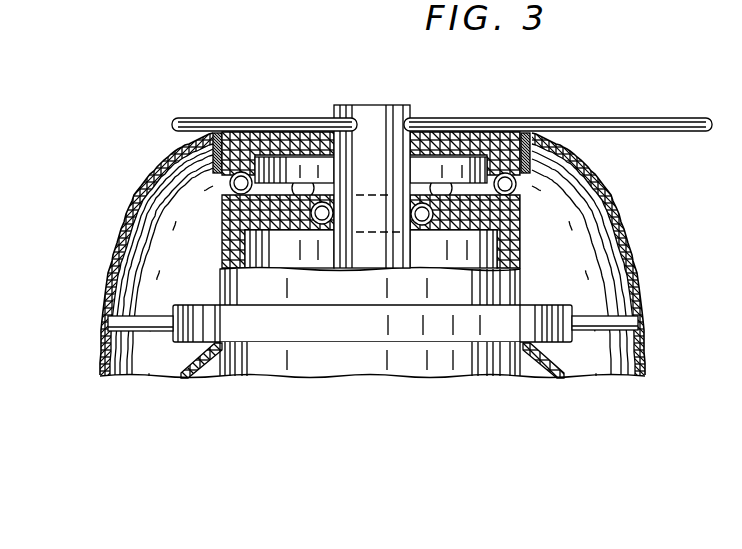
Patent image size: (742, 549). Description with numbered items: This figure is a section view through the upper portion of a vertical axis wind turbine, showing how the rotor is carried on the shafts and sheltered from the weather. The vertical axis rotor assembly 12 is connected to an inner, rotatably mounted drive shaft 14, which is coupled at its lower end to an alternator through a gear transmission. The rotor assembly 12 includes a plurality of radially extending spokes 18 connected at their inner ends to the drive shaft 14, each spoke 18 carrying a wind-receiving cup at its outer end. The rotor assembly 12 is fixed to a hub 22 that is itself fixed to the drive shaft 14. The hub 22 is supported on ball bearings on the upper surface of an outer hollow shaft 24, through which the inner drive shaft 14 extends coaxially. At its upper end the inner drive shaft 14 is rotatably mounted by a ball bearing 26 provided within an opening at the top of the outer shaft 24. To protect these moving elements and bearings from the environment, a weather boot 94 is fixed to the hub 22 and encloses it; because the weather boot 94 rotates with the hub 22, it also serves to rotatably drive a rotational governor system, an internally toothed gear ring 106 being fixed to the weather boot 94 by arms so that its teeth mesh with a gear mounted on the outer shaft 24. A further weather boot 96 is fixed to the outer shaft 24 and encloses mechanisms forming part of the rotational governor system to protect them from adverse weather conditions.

The vertical axis rotor assembly 12 is at (599, 158).
The inner drive shaft 14 is at (390, 104).
The spokes 18 is at (203, 117).
The hub 22 is at (297, 141).
The outer hollow shaft 24 is at (522, 280).
The ball bearing 26 is at (428, 231).
The weather boot 94 is at (122, 243).
The weather boot 96 is at (193, 363).
The internally toothed gear ring 106 is at (193, 310).